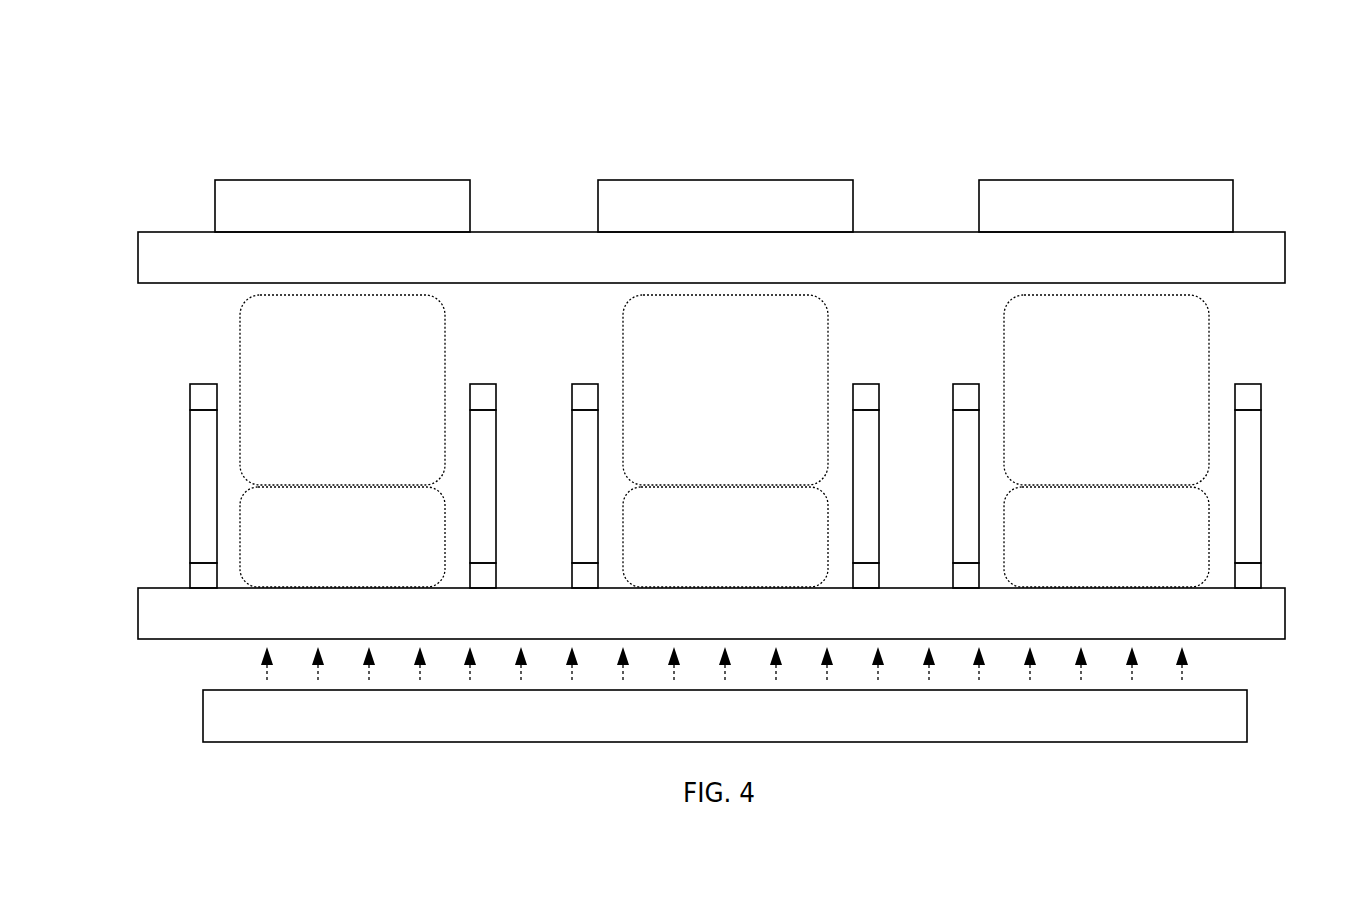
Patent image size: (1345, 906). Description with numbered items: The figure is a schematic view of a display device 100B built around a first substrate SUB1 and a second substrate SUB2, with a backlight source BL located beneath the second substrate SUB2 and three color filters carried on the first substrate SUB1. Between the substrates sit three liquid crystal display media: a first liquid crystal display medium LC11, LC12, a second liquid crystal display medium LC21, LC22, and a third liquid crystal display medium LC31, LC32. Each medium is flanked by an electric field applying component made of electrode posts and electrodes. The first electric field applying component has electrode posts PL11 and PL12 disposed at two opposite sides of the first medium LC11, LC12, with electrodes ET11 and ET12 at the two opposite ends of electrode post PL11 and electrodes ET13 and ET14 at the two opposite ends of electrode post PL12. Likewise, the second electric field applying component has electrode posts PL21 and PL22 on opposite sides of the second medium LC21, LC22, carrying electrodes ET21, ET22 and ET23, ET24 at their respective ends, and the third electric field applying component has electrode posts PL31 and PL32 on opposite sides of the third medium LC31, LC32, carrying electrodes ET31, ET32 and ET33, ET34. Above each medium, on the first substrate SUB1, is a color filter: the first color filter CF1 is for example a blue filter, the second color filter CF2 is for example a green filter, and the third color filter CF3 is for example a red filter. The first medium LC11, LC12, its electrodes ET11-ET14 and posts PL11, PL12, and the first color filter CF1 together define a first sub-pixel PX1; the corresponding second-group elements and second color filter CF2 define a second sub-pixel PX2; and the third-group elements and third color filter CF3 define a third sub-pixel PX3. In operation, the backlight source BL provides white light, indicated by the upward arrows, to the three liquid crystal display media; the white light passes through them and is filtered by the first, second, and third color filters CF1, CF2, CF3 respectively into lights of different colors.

The display device 100B is at (189, 37).
The first sub-pixel PX1 is at (496, 155).
The second sub-pixel PX2 is at (877, 155).
The third sub-pixel PX3 is at (1260, 155).
The first color filter CF1 is at (412, 216).
The second color filter CF2 is at (795, 216).
The third color filter CF3 is at (1175, 216).
The first substrate SUB1 is at (778, 267).
The second substrate SUB2 is at (778, 625).
The backlight source BL is at (812, 726).
The first liquid crystal display medium LC11 is at (366, 344).
The first liquid crystal display medium LC12 is at (366, 524).
The second liquid crystal display medium LC21 is at (749, 344).
The second liquid crystal display medium LC22 is at (749, 524).
The third liquid crystal display medium LC31 is at (1130, 344).
The third liquid crystal display medium LC32 is at (1130, 524).
The electrode ET11 is at (172, 398).
The electrode ET12 is at (172, 574).
The electrode ET13 is at (509, 391).
The electrode ET14 is at (509, 567).
The electrode ET21 is at (561, 400).
The electrode ET22 is at (561, 576).
The electrode ET23 is at (892, 391).
The electrode ET24 is at (892, 567).
The electrode ET31 is at (943, 400).
The electrode ET32 is at (943, 576).
The electrode ET33 is at (1273, 395).
The electrode ET34 is at (1273, 574).
The electrode post PL11 is at (172, 486).
The electrode post PL12 is at (509, 486).
The electrode post PL21 is at (561, 486).
The electrode post PL22 is at (892, 486).
The electrode post PL31 is at (943, 486).
The electrode post PL32 is at (1273, 486).